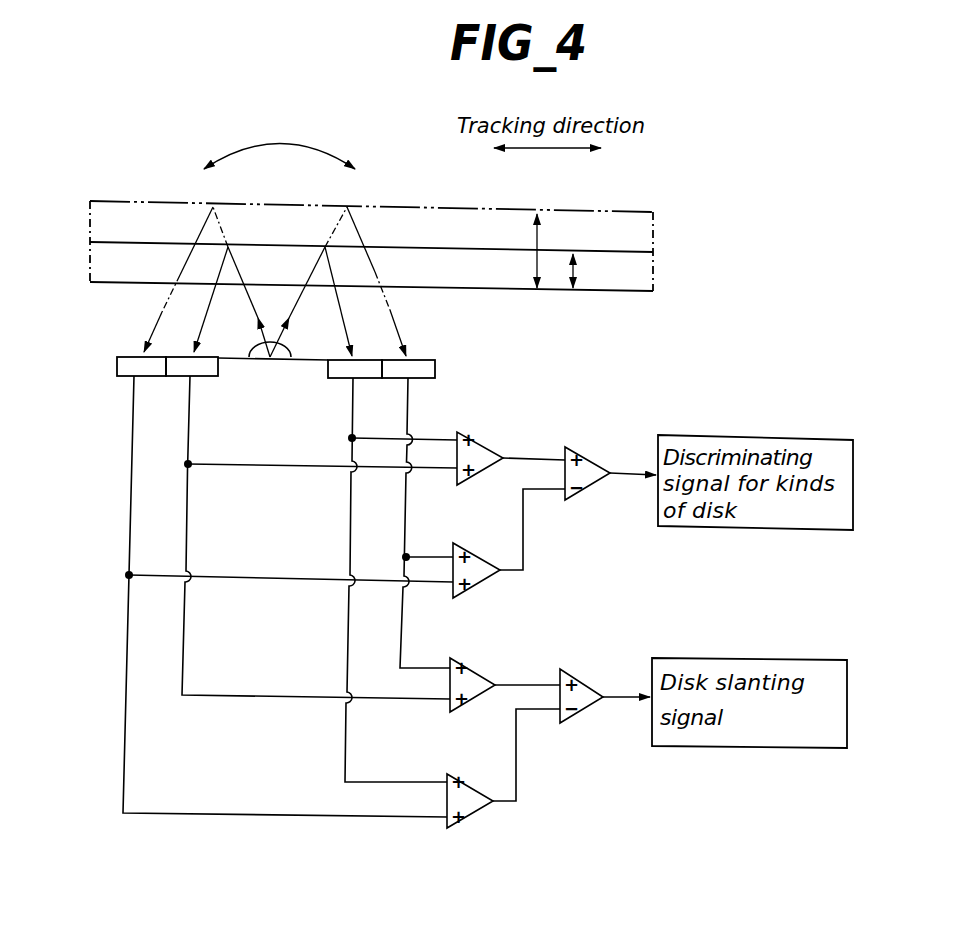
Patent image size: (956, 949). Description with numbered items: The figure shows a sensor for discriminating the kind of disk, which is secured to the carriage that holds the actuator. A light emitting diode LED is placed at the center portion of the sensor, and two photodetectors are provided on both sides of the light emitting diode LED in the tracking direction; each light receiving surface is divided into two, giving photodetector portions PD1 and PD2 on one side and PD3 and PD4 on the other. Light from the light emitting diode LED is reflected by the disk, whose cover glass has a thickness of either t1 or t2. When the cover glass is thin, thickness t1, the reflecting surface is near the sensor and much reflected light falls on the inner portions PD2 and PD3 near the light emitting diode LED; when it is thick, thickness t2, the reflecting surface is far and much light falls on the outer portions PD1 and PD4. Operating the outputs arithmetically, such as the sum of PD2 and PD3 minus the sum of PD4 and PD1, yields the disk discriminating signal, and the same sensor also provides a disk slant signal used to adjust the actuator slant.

The photodetector portion PD1 is at (117, 377).
The photodetector portion PD2 is at (203, 377).
The photodetector portion PD3 is at (330, 379).
The photodetector portion PD4 is at (425, 379).
The light emitting diode LED is at (283, 358).
The thickness of cover glass t1 is at (586, 271).
The thickness of cover glass t2 is at (522, 251).